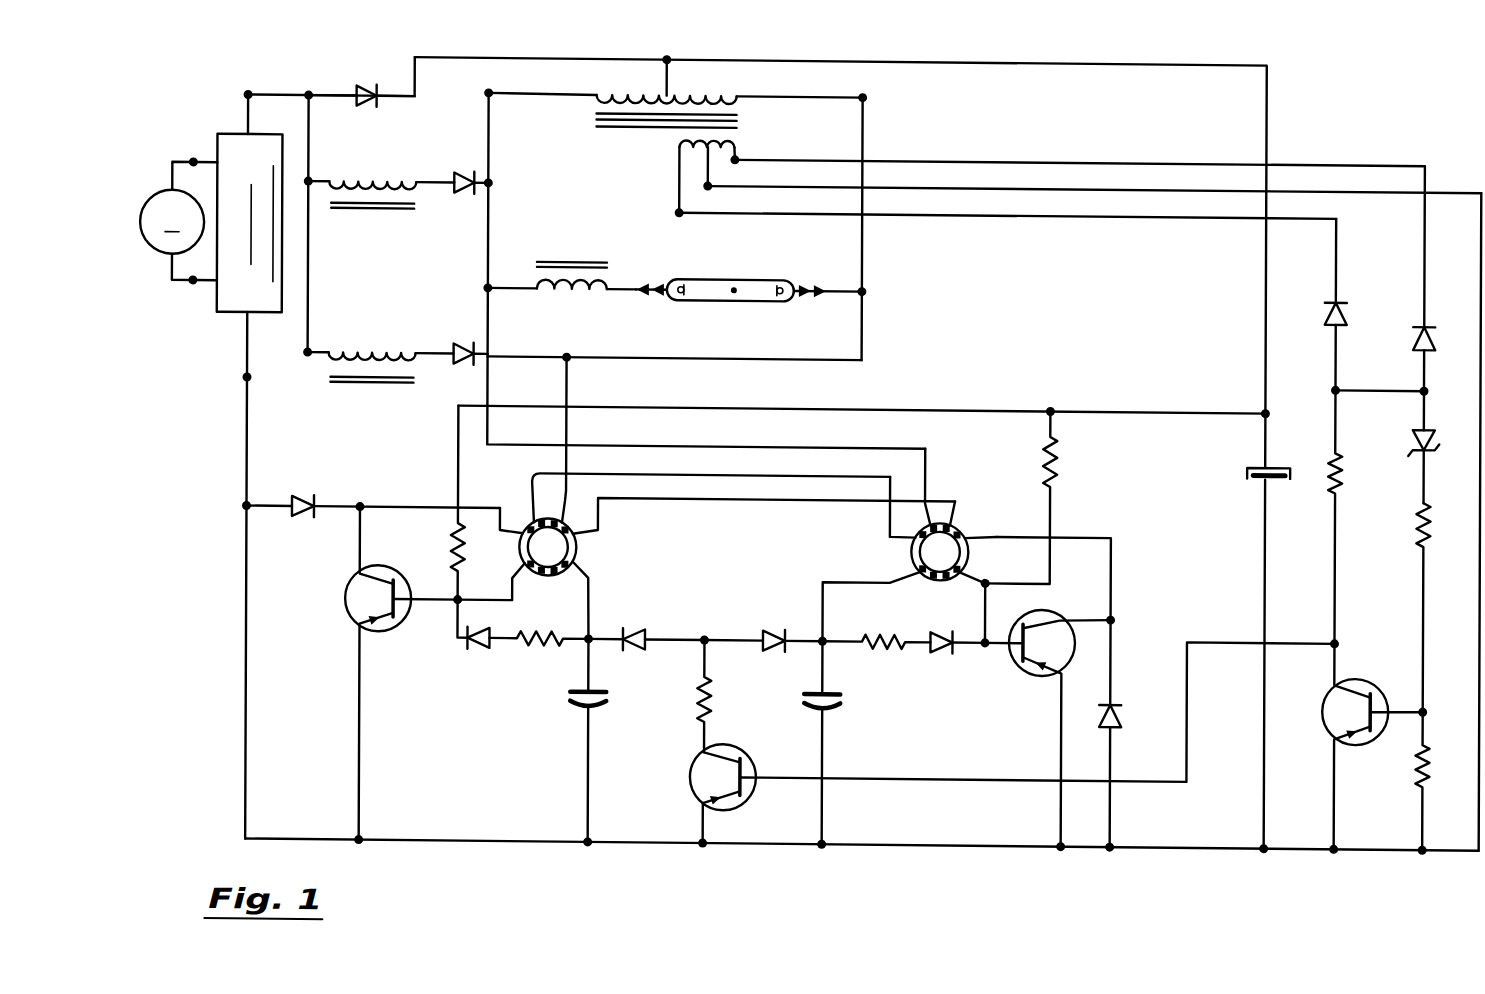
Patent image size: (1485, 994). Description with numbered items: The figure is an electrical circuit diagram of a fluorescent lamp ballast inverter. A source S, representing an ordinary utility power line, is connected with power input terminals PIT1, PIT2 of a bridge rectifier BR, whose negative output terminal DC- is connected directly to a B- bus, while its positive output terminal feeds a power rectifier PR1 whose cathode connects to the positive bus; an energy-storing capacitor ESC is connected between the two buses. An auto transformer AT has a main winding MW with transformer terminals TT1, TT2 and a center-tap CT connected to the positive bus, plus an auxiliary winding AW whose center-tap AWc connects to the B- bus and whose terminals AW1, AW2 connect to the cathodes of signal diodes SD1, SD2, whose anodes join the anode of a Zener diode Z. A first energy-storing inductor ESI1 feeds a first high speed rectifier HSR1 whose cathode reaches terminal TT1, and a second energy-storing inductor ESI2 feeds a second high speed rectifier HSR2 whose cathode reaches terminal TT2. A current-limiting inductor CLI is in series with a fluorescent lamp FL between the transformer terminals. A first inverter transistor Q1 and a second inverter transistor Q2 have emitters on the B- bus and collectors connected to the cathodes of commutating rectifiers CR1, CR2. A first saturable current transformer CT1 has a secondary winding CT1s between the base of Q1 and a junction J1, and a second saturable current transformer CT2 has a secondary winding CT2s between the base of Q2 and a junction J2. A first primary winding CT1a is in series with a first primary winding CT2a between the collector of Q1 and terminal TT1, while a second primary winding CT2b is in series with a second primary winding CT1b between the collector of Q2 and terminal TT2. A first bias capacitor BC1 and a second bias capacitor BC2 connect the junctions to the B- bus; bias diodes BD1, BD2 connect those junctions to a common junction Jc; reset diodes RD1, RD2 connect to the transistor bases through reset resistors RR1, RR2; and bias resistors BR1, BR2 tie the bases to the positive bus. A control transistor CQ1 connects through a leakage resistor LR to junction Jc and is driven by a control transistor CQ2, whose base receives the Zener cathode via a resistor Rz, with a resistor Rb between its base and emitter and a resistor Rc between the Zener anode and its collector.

The power input terminal PIT1 is at (194, 156).
The power input terminal PIT2 is at (194, 283).
The source S is at (172, 221).
The bridge rectifier BR is at (238, 311).
The negative output terminal DC- is at (246, 376).
The power rectifier PR1 is at (371, 100).
The first energy-storing inductor ESI1 is at (397, 212).
The first high speed rectifier HSR1 is at (468, 190).
The second energy-storing inductor ESI2 is at (380, 386).
The second high speed rectifier HSR2 is at (463, 342).
The transformer terminal TT1 is at (492, 93).
The main winding MW is at (640, 86).
The center-tap CT is at (668, 86).
The auto transformer AT is at (620, 127).
The auxiliary winding AW is at (684, 141).
The transformer terminal TT2 is at (862, 92).
The auxiliary winding terminal AW2 is at (739, 151).
The center-tap AWc is at (705, 179).
The auxiliary winding terminal AW1 is at (678, 209).
The current-limiting inductor CLI is at (579, 254).
The fluorescent lamp FL is at (723, 297).
The first signal diode SD1 is at (1331, 286).
The second signal diode SD2 is at (1421, 310).
The Zener diode Z is at (1420, 416).
The resistor Rz is at (1419, 516).
The resistor Rb is at (1433, 743).
The resistor Rc is at (1344, 474).
The energy-storing capacitor ESC is at (1259, 470).
The second bias resistor BR2 is at (1054, 452).
The second commutating rectifier CR2 is at (1114, 690).
The second inverter transistor Q2 is at (1034, 670).
The control transistor CQ2 is at (1375, 667).
The second saturable current transformer CT2 is at (898, 553).
The first primary winding CT2a is at (926, 508).
The second primary winding CT2b is at (960, 502).
The secondary winding CT2s is at (957, 567).
The junction J2 is at (830, 624).
The second bias diode BD2 is at (777, 620).
The reset resistor RR2 is at (887, 647).
The second reset diode RD2 is at (945, 645).
The second bias capacitor BC2 is at (845, 698).
The first saturable current transformer CT1 is at (594, 547).
The first primary winding CT1a is at (533, 512).
The second primary winding CT1b is at (583, 490).
The secondary winding CT1s is at (570, 564).
The junction J1 is at (594, 640).
The first bias diode BD1 is at (637, 620).
The junction Jc is at (709, 623).
The leakage resistor LR is at (713, 690).
The control transistor CQ1 is at (693, 770).
The first bias capacitor BC1 is at (611, 687).
The reset resistor RR1 is at (551, 644).
The first reset diode RD1 is at (481, 645).
The first inverter transistor Q1 is at (348, 605).
The first bias resistor BR1 is at (456, 550).
The first commutating rectifier CR1 is at (308, 490).
The B- bus B- is at (938, 840).